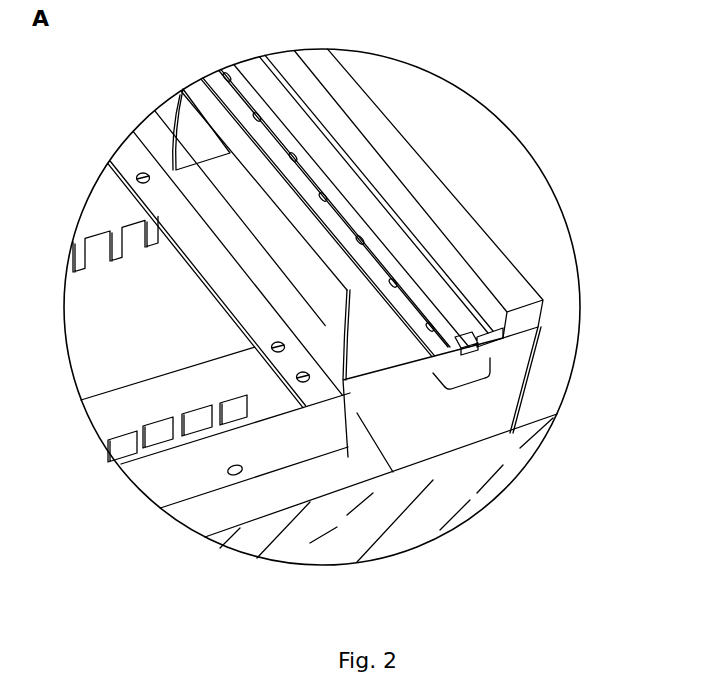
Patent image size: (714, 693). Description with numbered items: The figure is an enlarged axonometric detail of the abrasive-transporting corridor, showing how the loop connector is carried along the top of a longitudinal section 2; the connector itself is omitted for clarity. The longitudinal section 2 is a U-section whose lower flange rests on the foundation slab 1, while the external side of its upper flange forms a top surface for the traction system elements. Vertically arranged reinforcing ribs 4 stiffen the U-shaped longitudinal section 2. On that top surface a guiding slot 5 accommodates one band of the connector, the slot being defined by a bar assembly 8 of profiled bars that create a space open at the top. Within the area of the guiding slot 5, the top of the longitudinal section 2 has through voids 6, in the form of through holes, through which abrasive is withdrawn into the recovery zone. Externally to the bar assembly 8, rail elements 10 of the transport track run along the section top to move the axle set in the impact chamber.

The foundation slab 1 is at (455, 490).
The longitudinal section 2 is at (527, 380).
The reinforcing rib 4 is at (197, 137).
The guiding slot 5 is at (443, 337).
The through void 6 is at (363, 240).
The bar assembly 8 is at (470, 380).
The rail element 10 is at (453, 223).